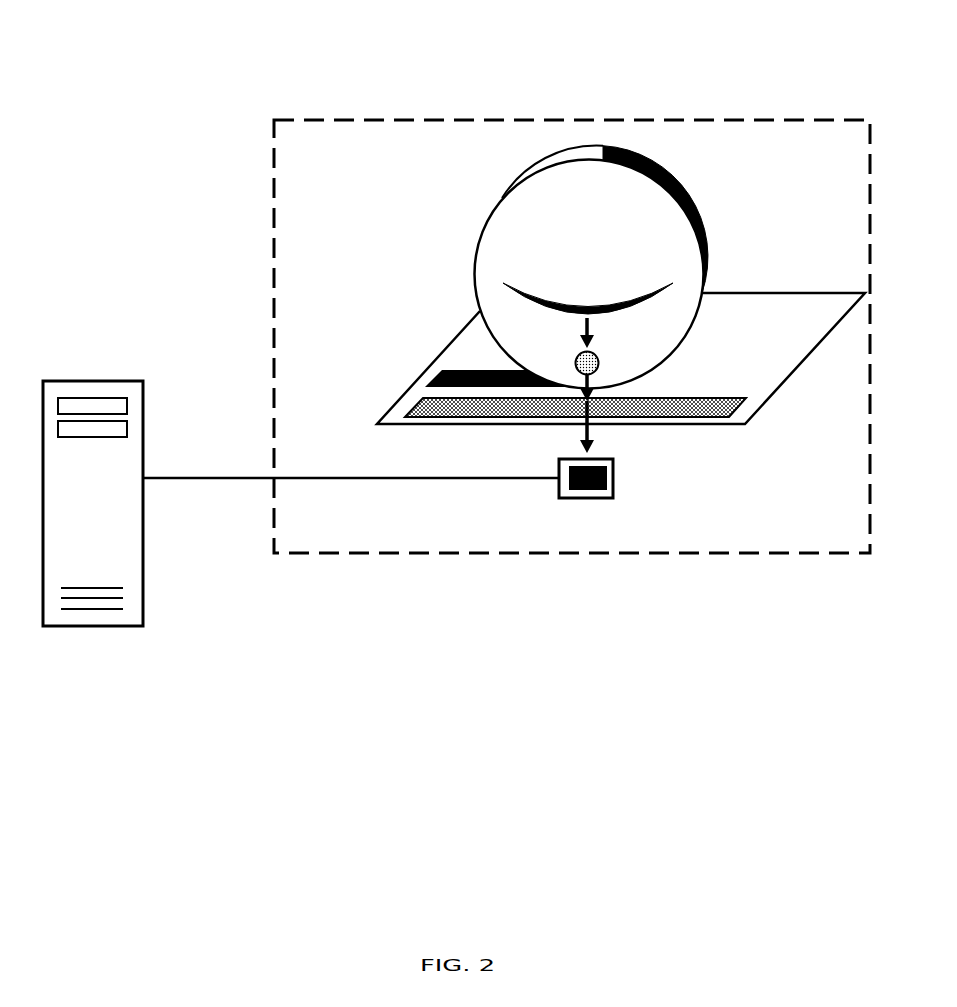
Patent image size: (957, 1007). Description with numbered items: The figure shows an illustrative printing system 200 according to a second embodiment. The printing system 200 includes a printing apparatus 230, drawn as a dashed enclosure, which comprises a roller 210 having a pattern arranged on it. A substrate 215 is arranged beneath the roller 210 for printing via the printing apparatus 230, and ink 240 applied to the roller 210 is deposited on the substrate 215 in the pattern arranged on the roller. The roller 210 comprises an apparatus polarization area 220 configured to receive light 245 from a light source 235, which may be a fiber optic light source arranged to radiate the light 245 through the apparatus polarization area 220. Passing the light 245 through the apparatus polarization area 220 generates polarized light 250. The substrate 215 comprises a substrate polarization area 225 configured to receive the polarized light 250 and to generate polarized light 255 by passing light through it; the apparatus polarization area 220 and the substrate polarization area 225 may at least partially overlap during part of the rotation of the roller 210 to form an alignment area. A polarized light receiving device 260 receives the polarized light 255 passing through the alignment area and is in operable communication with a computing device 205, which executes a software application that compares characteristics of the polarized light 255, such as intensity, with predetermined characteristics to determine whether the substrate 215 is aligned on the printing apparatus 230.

The printing system 200 is at (582, 61).
The computing device 205 is at (103, 379).
The roller 210 is at (520, 173).
The substrate 215 is at (784, 292).
The apparatus polarization area 220 is at (597, 360).
The substrate polarization area 225 is at (714, 397).
The printing apparatus 230 is at (703, 118).
The light source 235 is at (620, 305).
The ink 240 is at (672, 176).
The light 245 is at (582, 336).
The polarized light 250 is at (580, 387).
The polarized light 255 is at (586, 439).
The polarized light receiving device 260 is at (615, 473).